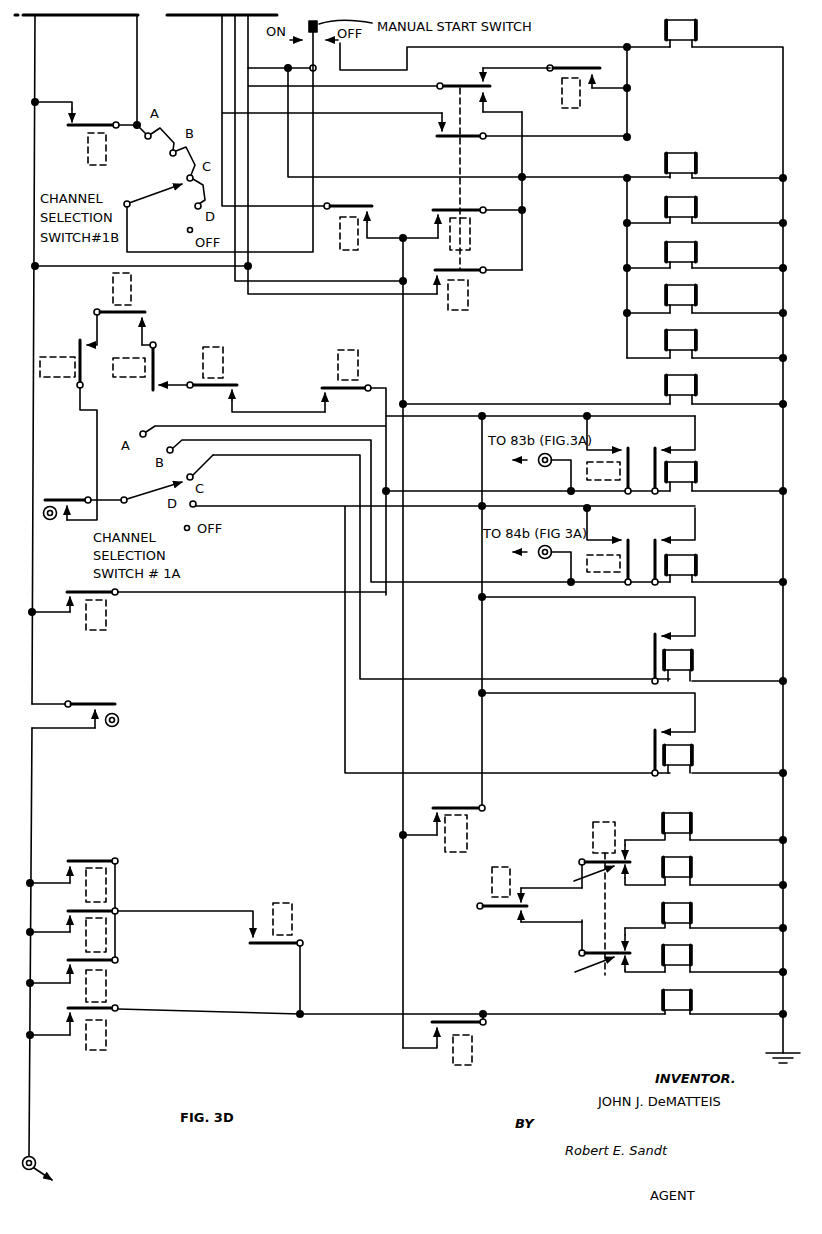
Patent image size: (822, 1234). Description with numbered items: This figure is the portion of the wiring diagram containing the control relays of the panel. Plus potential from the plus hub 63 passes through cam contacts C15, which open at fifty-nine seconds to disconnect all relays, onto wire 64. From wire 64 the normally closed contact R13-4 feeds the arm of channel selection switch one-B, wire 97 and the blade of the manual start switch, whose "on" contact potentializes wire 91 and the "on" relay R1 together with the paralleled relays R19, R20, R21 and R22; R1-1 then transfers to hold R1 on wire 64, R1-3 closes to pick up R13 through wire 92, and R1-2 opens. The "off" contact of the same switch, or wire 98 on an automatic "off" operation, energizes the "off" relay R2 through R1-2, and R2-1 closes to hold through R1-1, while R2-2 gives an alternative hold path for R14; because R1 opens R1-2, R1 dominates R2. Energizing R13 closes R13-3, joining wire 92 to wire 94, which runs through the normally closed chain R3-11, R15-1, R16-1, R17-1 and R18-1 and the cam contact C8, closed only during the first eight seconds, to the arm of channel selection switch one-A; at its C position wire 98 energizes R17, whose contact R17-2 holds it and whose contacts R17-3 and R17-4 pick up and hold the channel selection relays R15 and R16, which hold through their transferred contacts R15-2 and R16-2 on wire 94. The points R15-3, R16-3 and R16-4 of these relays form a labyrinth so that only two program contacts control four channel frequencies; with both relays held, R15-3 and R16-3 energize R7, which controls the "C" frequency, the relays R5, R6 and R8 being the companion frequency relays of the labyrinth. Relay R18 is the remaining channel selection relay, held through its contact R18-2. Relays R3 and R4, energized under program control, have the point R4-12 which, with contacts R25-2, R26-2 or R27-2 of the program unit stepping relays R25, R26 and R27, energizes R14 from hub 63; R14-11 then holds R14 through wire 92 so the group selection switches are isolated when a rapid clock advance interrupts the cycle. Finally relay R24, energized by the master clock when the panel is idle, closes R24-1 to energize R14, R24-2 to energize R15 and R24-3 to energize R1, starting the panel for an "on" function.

The wire 91 is at (247, 29).
The wire 92 is at (235, 50).
The wire 98 is at (221, 85).
The wire 97 is at (318, 150).
The wire 64 is at (65, 265).
The wire 94 is at (482, 634).
The plus hub 63 is at (109, 1164).
The cam contacts C8 is at (46, 519).
The cam contacts C15 is at (119, 717).
The 'on' relay R1 is at (697, 163).
The contact of relay R1 R1-1 is at (480, 84).
The contact of relay R1 R1-2 is at (450, 136).
The contact of relay R1 R1-3 is at (430, 213).
The 'off' relay R2 is at (697, 30).
The contact of relay R2 R2-1 is at (600, 70).
The contact of relay R2 R2-2 is at (375, 210).
The relay R3 is at (348, 348).
The contact of relay R3 R3-11 is at (324, 396).
The relay R4 is at (288, 930).
The contact of relay R4 R4-12 is at (251, 946).
The relay R5 coil R5 is at (692, 868).
The relay R6 coil R6 is at (692, 914).
The relay R7 is at (692, 824).
The relay R8 coil R8 is at (692, 956).
The relay R13 is at (88, 157).
The contact of relay R13 R13-3 is at (430, 812).
The contact of relay R13 R13-4 is at (74, 118).
The relay R14 is at (692, 1001).
The contact of relay R14 R14-11 is at (432, 1020).
The channel selection relay R15 is at (697, 473).
The contact of relay R15 R15-1 is at (228, 387).
The contact of relay R15 R15-2 is at (678, 447).
The contact of relay R15 R15-3 is at (516, 909).
The channel selection relay R16 is at (697, 566).
The contact of relay R16 R16-1 is at (178, 373).
The contact of relay R16 R16-2 is at (669, 546).
The contact of relay R16 R16-3 is at (603, 864).
The relay R16 transfer contact 4 R16-4 is at (612, 950).
The channel selection relay R17 is at (695, 661).
The contact of relay R17 R17-1 is at (147, 316).
The contact of relay R17 R17-2 is at (671, 634).
The contact of relay R17 R17-3 is at (620, 452).
The contact of relay R17 R17-4 is at (609, 546).
The channel selection relay R18 is at (695, 756).
The contact of relay R18 R18-1 is at (88, 340).
The contact of relay R18 R18-2 is at (670, 731).
The relay R19 is at (697, 208).
The relay R20 is at (697, 253).
The relay R21 is at (697, 296).
The relay R22 is at (697, 341).
The relay R24 is at (470, 292).
The contact of relay R24 R24-1 is at (66, 1009).
The contact of relay R24 R24-2 is at (66, 592).
The contact of relay R24 R24-3 is at (432, 274).
The relay R25 is at (106, 880).
The contact of relay R25 R25-2 is at (66, 862).
The relay R26 is at (106, 932).
The contact of relay R26 R26-2 is at (66, 912).
The relay R27 is at (106, 982).
The contact of relay R27 R27-2 is at (66, 961).